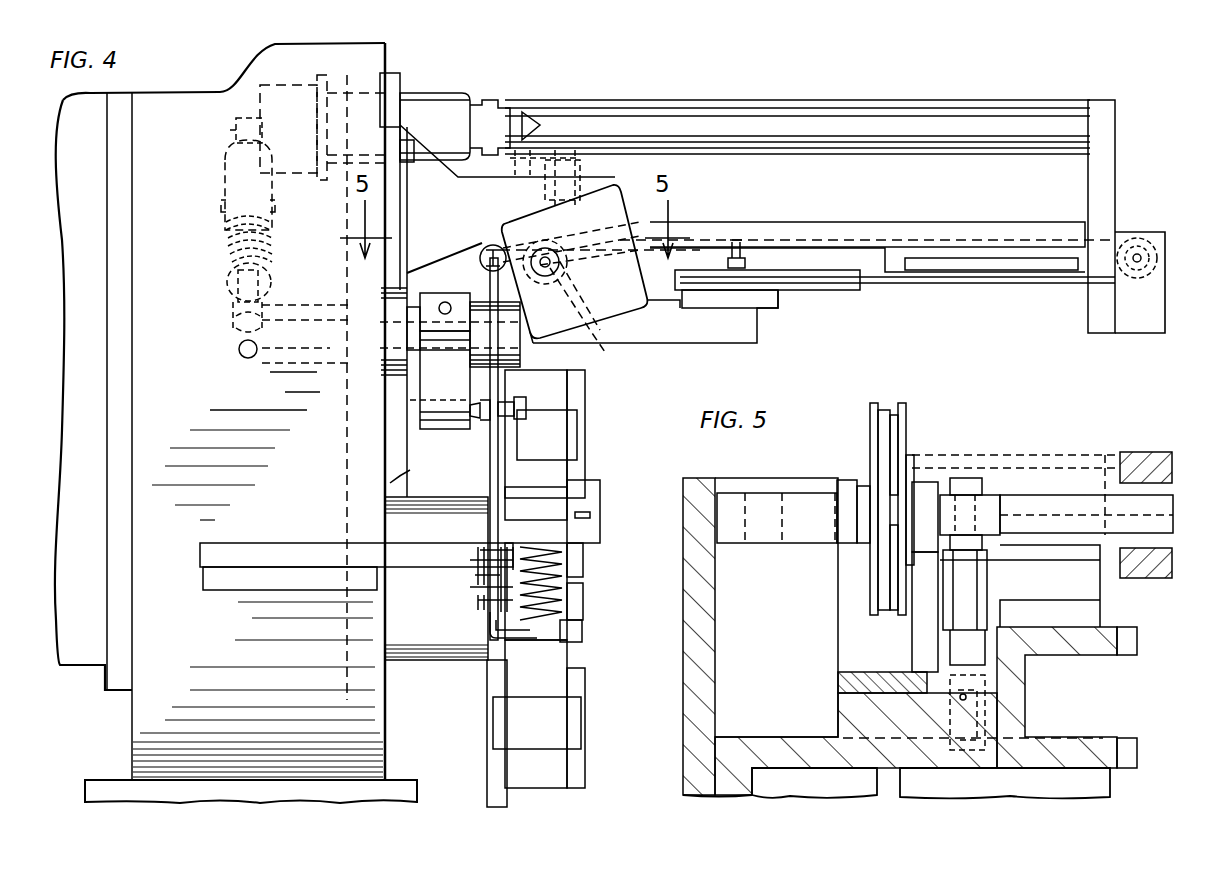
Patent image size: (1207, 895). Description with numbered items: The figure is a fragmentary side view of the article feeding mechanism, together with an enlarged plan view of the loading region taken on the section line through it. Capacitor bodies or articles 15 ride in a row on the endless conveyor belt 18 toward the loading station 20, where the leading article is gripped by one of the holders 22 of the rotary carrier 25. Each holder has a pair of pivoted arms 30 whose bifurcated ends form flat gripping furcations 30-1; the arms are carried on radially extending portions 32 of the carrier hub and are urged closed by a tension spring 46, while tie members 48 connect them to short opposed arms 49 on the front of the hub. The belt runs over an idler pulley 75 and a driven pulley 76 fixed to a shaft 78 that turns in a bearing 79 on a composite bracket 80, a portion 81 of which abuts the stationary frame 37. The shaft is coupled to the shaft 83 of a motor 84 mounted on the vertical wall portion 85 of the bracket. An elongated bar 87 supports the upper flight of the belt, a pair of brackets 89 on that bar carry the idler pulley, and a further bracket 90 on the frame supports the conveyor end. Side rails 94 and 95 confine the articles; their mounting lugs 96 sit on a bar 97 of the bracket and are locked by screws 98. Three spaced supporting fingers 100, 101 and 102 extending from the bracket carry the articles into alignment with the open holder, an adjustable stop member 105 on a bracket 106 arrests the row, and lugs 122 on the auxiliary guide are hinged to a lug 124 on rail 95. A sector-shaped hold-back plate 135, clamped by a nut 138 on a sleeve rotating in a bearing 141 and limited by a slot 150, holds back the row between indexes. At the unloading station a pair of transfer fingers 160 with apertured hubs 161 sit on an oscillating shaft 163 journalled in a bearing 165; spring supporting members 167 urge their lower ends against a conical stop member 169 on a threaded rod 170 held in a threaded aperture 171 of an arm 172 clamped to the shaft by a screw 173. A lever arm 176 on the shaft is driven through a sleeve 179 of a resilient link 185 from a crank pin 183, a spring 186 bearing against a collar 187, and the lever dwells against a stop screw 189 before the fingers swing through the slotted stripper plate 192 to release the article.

In FIG. 4, the articles 15 is at (475, 578).
In FIG. 4, the conveyor belt 18 is at (800, 238).
In FIG. 5, the conveyor belt 18 is at (1058, 505).
In FIG. 5, the loading station 20 is at (950, 432).
In FIG. 5, the holders 22 is at (866, 445).
In FIG. 4, the rotary carrier 25 is at (590, 515).
In FIG. 4, the arms 30 is at (490, 630).
In FIG. 4, the furcations 30-1 is at (490, 540).
In FIG. 5, the furcations 30-1 is at (900, 440).
In FIG. 4, the radially extending portions 32 is at (548, 478).
In FIG. 4, the frame 37 is at (340, 688).
In FIG. 5, the frame 37 is at (715, 693).
In FIG. 4, the tension spring 46 is at (538, 616).
In FIG. 4, the tie members 48 is at (560, 425).
In FIG. 4, the arms 49 is at (575, 398).
In FIG. 4, the idler pulley 75 is at (1125, 240).
In FIG. 4, the driven pulley 76 is at (565, 282).
In FIG. 5, the driven pulley 76 is at (1010, 500).
In FIG. 5, the shaft 78 is at (980, 480).
In FIG. 5, the bearing 79 is at (987, 590).
In FIG. 4, the composite bracket 80 is at (700, 345).
In FIG. 5, the composite bracket 80 is at (1085, 622).
In FIG. 4, the portion of bracket 81 is at (398, 130).
In FIG. 4, the motor shaft 83 is at (578, 305).
In FIG. 5, the motor shaft 83 is at (990, 705).
In FIG. 4, the motor 84 is at (527, 233).
In FIG. 5, the motor 84 is at (1080, 760).
In FIG. 5, the wall portion 85 is at (1137, 752).
In FIG. 4, the elongated bar 87 is at (893, 272).
In FIG. 5, the elongated bar 87 is at (1105, 470).
In FIG. 4, the brackets 89 is at (988, 272).
In FIG. 4, the bracket 90 is at (720, 122).
In FIG. 4, the side rail 94 is at (850, 232).
In FIG. 5, the side rail 94 is at (1150, 570).
In FIG. 5, the side rail 95 is at (1150, 460).
In FIG. 4, the mounting lugs 96 is at (770, 290).
In FIG. 4, the bar 97 is at (765, 305).
In FIG. 4, the screws 98 is at (745, 250).
In FIG. 5, the supporting finger 100 is at (922, 500).
In FIG. 5, the supporting finger 101 is at (918, 440).
In FIG. 5, the supporting finger 102 is at (850, 488).
In FIG. 5, the adjustable stop member 105 is at (796, 525).
In FIG. 5, the bracket 106 is at (730, 508).
In FIG. 4, the lugs 122 is at (575, 170).
In FIG. 4, the lug 124 is at (590, 160).
In FIG. 4, the hold-back plate 135 is at (525, 165).
In FIG. 4, the nut 138 is at (530, 125).
In FIG. 4, the bearing 141 is at (440, 100).
In FIG. 4, the slot 150 is at (492, 110).
In FIG. 4, the transfer fingers 160 is at (490, 468).
In FIG. 4, the apertured hub 161 is at (520, 350).
In FIG. 4, the shaft 163 is at (300, 350).
In FIG. 4, the bearing 165 is at (268, 362).
In FIG. 4, the spring supporting members 167 is at (480, 258).
In FIG. 4, the conical stop member 169 is at (500, 420).
In FIG. 4, the rod 170 is at (478, 420).
In FIG. 4, the threaded aperture 171 is at (462, 405).
In FIG. 4, the arm 172 is at (423, 370).
In FIG. 4, the screw 173 is at (447, 300).
In FIG. 4, the lever arm 176 is at (233, 318).
In FIG. 4, the sleeve 179 is at (222, 190).
In FIG. 4, the crank pin 183 is at (232, 130).
In FIG. 4, the resilient link 185 is at (222, 163).
In FIG. 4, the spring 186 is at (226, 240).
In FIG. 4, the collar 187 is at (228, 275).
In FIG. 4, the stop screw 189 is at (239, 345).
In FIG. 4, the stripper plate 192 is at (305, 552).